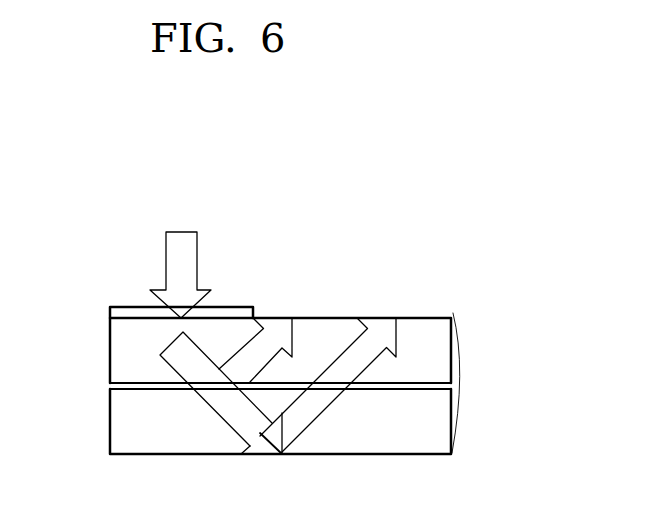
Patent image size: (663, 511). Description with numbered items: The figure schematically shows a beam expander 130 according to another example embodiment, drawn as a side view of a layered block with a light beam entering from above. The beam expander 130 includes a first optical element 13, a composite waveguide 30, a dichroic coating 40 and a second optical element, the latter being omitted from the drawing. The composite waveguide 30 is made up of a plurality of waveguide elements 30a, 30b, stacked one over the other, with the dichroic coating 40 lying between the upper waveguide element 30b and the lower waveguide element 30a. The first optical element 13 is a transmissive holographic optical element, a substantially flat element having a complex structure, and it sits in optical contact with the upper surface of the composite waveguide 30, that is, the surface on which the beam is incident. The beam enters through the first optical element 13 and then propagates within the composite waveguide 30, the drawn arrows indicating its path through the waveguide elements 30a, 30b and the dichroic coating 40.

The beam expander 130 is at (506, 229).
The first optical element 13 is at (113, 313).
The composite waveguide 30 is at (314, 383).
The waveguide element 30a is at (443, 427).
The waveguide element 30b is at (443, 350).
The dichroic coating 40 is at (112, 386).